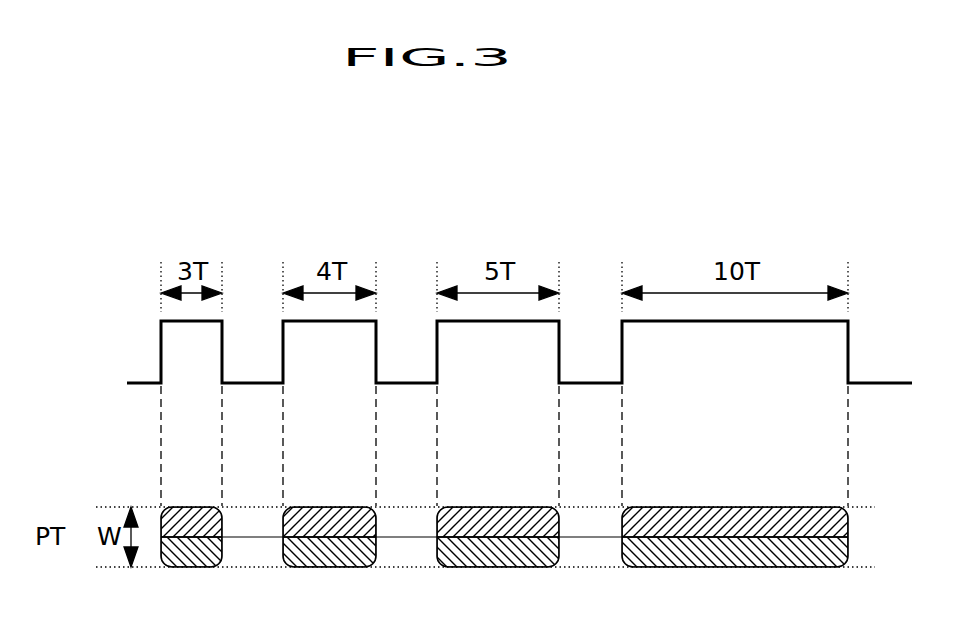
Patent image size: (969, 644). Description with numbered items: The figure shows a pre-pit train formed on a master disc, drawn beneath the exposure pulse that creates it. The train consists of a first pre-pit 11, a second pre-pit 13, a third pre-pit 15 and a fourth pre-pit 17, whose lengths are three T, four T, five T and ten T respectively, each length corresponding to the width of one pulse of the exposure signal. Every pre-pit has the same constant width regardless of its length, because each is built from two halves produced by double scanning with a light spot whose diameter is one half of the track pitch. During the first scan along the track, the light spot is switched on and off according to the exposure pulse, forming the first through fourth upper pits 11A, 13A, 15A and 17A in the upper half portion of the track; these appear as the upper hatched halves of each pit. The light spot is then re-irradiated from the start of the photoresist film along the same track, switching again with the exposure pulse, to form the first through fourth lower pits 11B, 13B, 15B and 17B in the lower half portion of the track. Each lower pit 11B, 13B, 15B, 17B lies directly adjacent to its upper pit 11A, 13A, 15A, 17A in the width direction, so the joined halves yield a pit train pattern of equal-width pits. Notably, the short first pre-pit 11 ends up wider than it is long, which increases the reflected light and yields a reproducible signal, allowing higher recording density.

The first pre-pit 11 is at (165, 520).
The first upper pit 11A is at (190, 507).
The first lower pit 11B is at (190, 567).
The second pre-pit 13 is at (308, 520).
The second upper pit 13A is at (320, 507).
The second lower pit 13B is at (320, 567).
The third pre-pit 15 is at (473, 520).
The third upper pit 15A is at (468, 507).
The third lower pit 15B is at (468, 567).
The fourth pre-pit 17 is at (711, 520).
The fourth upper pit 17A is at (653, 507).
The fourth lower pit 17B is at (653, 567).